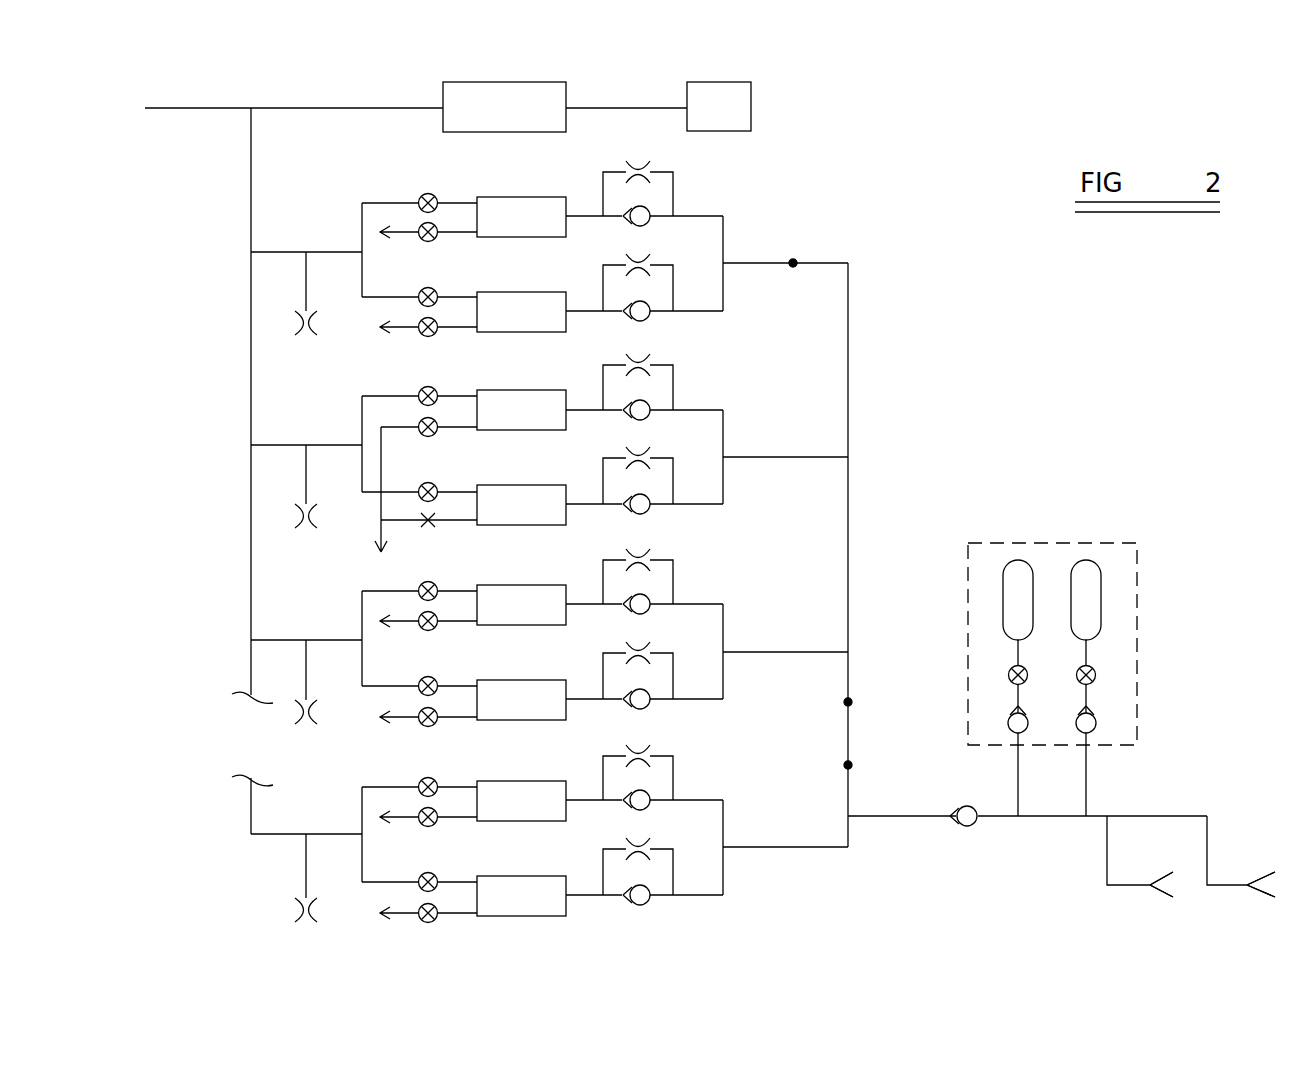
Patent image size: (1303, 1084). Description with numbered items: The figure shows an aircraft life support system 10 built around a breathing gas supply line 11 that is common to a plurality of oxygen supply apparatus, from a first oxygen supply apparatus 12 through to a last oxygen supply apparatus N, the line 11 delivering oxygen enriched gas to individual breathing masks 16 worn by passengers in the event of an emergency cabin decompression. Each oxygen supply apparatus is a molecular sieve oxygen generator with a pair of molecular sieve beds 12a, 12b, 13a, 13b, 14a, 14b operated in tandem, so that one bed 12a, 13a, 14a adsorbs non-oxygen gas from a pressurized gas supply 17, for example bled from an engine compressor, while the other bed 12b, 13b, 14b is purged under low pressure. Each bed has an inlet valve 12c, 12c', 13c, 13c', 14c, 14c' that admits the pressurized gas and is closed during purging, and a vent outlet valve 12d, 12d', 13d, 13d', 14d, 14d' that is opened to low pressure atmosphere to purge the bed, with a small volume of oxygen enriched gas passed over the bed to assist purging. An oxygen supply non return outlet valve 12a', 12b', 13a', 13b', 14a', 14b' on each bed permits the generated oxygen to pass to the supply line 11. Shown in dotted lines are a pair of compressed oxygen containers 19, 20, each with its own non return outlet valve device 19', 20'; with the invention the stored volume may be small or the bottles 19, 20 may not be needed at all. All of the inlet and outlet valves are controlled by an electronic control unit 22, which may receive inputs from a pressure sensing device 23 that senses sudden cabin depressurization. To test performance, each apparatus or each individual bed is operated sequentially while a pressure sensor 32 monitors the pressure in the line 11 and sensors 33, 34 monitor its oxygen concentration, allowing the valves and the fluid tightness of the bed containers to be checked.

The aircraft life support system 10 is at (220, 516).
The breathing gas supply line 11 is at (849, 438).
The oxygen supply apparatus 12 is at (532, 186).
The molecular sieve bed 12a is at (521, 217).
The molecular sieve bed 12b is at (521, 312).
The inlet valve 12c is at (390, 176).
The vent outlet valve 12d is at (469, 245).
The non return outlet valve 12a' is at (670, 230).
The non return outlet valve 12b' is at (671, 324).
The inlet valve 12c' is at (471, 285).
The vent outlet valve 12d' is at (457, 346).
The molecular sieve bed 13a is at (521, 410).
The molecular sieve bed 13b is at (521, 505).
The inlet valve 13c is at (390, 369).
The vent outlet valve 13d is at (469, 441).
The non return outlet valve 13a' is at (670, 422).
The non return outlet valve 13b' is at (671, 518).
The inlet valve 13c' is at (471, 480).
The vent outlet valve 13d' is at (458, 542).
The molecular sieve bed 14a is at (521, 605).
The molecular sieve bed 14b is at (521, 700).
The inlet valve 14c is at (379, 575).
The vent outlet valve 14d is at (469, 634).
The non return outlet valve 14a' is at (670, 618).
The non return outlet valve 14b' is at (671, 714).
The inlet valve 14c' is at (471, 673).
The vent outlet valve 14d' is at (457, 733).
The breathing masks 16 is at (1257, 885).
The pressurized gas supply 17 is at (251, 375).
The compressed oxygen container 19 is at (1024, 603).
The compressed oxygen container 20 is at (1090, 603).
The non return outlet valve device 19' is at (968, 752).
The non return outlet valve device 20' is at (1142, 756).
The electronic control unit 22 is at (538, 101).
The pressure sensing device 23 is at (727, 108).
The pressure sensor 32 is at (846, 765).
The oxygen concentration sensor 33 is at (793, 268).
The oxygen concentration sensor 34 is at (846, 702).
The oxygen supply apparatus N is at (700, 793).